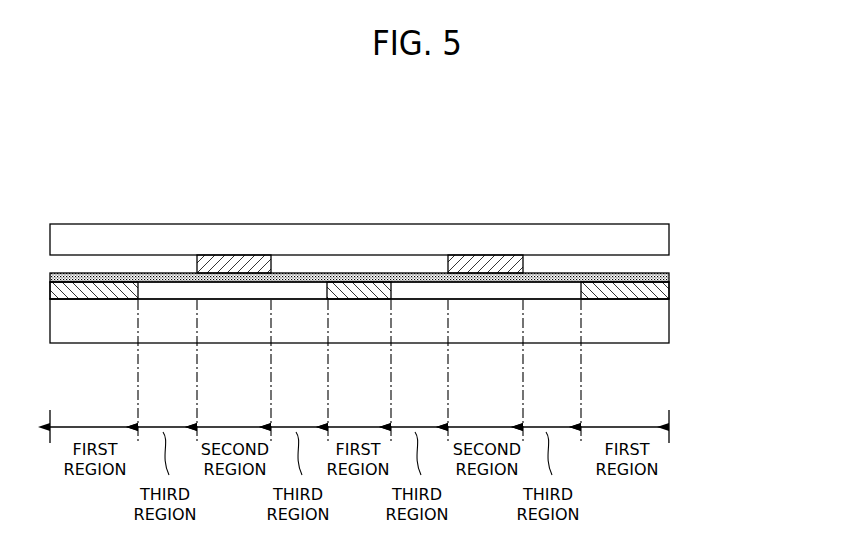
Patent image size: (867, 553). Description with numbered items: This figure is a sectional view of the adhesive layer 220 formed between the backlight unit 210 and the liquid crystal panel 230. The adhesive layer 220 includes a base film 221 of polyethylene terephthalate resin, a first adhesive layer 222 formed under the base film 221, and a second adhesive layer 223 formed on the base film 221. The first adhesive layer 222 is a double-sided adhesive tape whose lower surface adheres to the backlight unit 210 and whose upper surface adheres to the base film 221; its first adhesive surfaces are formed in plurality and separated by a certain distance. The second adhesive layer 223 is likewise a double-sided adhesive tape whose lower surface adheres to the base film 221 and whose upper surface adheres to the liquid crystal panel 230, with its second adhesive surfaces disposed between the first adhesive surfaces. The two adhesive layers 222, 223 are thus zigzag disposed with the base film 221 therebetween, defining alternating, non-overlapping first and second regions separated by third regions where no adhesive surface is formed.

The liquid crystal panel 230 is at (669, 242).
The adhesive layer 220 is at (431, 267).
The second adhesive layer 223 is at (523, 263).
The base film 221 is at (669, 277).
The first adhesive layer 222 is at (401, 287).
The backlight unit 210 is at (669, 325).